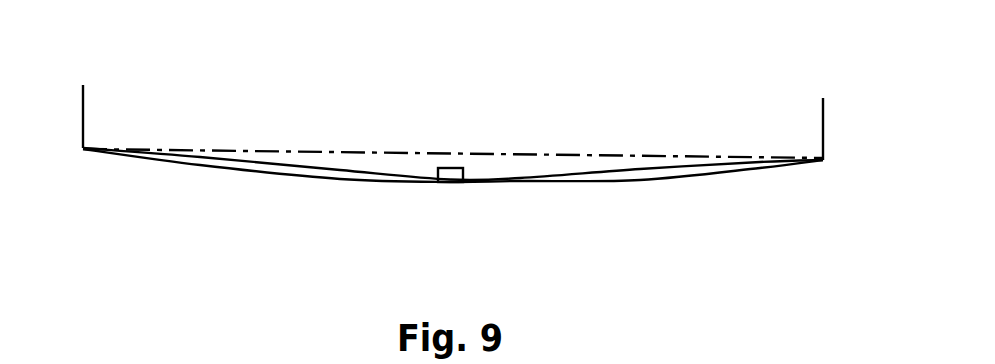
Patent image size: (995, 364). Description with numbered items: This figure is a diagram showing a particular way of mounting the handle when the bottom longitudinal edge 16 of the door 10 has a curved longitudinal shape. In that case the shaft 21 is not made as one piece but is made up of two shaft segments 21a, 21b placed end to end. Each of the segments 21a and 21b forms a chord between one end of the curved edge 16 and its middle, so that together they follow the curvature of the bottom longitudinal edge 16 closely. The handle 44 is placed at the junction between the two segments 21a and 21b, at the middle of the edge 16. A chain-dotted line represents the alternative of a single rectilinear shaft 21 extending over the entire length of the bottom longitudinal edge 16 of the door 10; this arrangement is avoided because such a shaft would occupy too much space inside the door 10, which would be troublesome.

The door 10 is at (823, 142).
The bottom longitudinal edge 16 is at (190, 167).
The shaft 21 is at (400, 152).
The shaft segment 21a is at (317, 175).
The shaft segment 21b is at (660, 172).
The handle 44 is at (448, 182).